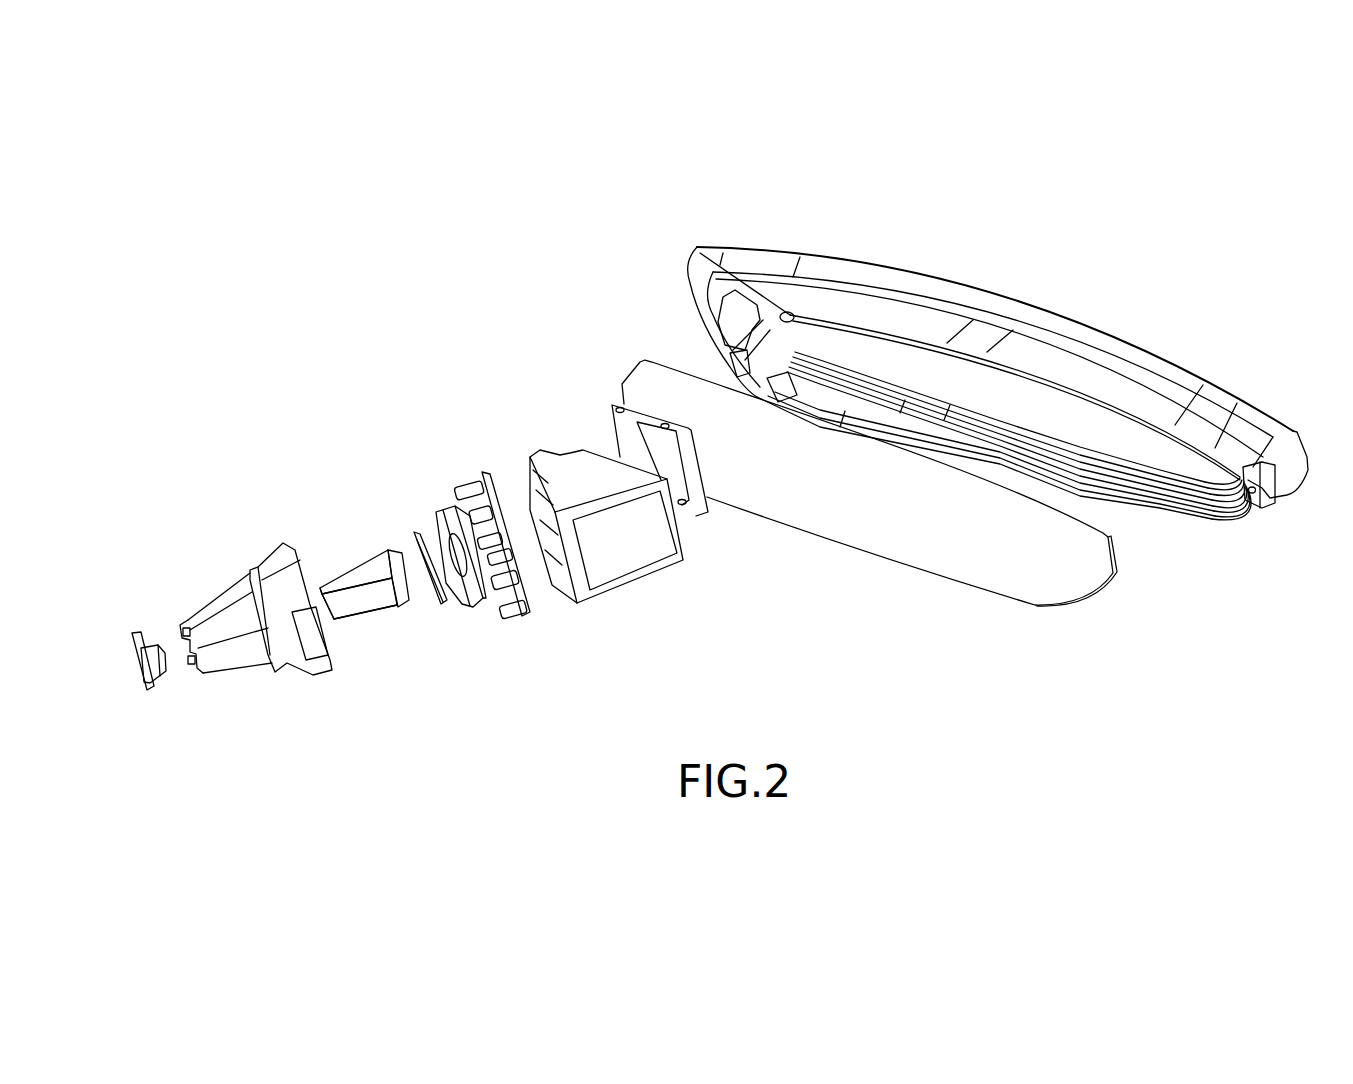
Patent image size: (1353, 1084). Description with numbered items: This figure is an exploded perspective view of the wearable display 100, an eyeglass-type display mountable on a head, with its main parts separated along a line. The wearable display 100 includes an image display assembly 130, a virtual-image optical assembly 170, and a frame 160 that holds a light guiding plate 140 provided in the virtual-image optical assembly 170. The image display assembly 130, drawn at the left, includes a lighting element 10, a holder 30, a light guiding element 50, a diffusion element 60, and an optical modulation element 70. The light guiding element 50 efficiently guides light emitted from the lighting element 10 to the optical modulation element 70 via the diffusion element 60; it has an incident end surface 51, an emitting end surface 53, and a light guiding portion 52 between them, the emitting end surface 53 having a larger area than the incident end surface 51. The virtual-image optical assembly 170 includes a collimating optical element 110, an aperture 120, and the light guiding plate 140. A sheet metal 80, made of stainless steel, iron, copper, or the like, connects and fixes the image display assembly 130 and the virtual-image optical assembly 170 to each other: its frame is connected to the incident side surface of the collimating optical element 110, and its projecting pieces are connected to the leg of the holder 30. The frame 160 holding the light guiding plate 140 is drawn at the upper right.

The wearable display 100 is at (605, 246).
The lighting element 10 is at (151, 690).
The holder 30 is at (263, 668).
The light guiding element 50 is at (368, 600).
The incident end surface 51 is at (323, 595).
The light guiding portion 52 is at (372, 614).
The emitting end surface 53 is at (410, 600).
The diffusion element 60 is at (433, 590).
The optical modulation element 70 is at (470, 610).
The sheet metal 80 is at (525, 614).
The collimating optical element 110 is at (661, 578).
The aperture 120 is at (710, 500).
The image display assembly 130 is at (445, 480).
The light guiding plate 140 is at (1060, 588).
The frame 160 is at (1083, 333).
The virtual-image optical assembly 170 is at (655, 353).